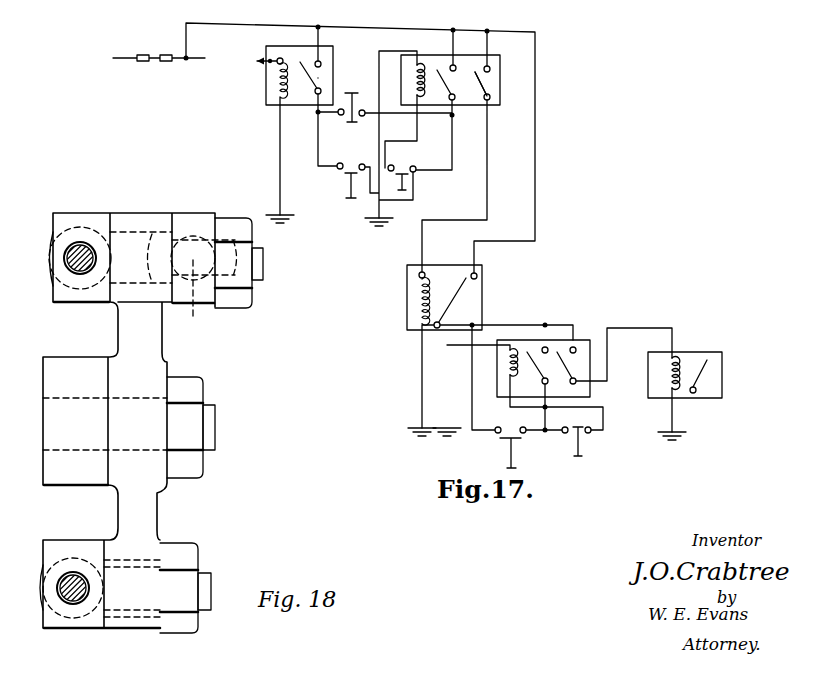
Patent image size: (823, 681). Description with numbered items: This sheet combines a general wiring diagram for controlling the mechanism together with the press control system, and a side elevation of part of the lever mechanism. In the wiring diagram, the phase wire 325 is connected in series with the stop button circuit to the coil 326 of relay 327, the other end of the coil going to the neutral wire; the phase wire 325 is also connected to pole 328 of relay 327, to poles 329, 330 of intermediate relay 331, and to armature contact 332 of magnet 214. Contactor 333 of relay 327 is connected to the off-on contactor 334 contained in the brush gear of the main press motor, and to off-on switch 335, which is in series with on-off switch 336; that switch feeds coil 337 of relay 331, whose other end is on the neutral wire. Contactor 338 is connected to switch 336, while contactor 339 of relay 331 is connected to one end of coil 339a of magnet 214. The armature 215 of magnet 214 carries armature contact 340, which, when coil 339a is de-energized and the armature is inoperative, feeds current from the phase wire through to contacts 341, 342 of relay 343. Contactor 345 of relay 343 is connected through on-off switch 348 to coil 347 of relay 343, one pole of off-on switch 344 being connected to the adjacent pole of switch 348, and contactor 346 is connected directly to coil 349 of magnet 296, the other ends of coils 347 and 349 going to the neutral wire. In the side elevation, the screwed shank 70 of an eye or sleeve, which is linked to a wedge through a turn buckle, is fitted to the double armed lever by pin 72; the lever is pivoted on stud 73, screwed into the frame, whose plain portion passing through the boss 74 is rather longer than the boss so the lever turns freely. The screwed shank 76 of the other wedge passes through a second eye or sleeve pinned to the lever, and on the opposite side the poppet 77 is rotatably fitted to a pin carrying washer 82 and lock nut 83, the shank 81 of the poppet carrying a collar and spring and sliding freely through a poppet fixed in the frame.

In FIG. 17, the phase wire 325 is at (123, 55).
In FIG. 17, the coil of relay 327 326 is at (272, 80).
In FIG. 17, the relay 327 is at (302, 94).
In FIG. 17, the pole of relay 327 328 is at (318, 61).
In FIG. 17, the pole of intermediate relay 331 329 is at (460, 67).
In FIG. 17, the pole of intermediate relay 331 330 is at (491, 69).
In FIG. 17, the intermediate relay 331 is at (441, 66).
In FIG. 17, the armature contact of magnet 214 332 is at (480, 274).
In FIG. 17, the contactor of relay 327 333 is at (322, 88).
In FIG. 17, the off-on contactor 334 is at (353, 100).
In FIG. 17, the off-on switch 335 is at (338, 170).
In FIG. 17, the on-off switch 336 is at (415, 173).
In FIG. 17, the coil of relay 331 337 is at (411, 65).
In FIG. 17, the contactor 338 is at (461, 99).
In FIG. 17, the contactor of relay 331 339 is at (497, 93).
In FIG. 17, the coil of magnet 214 339a is at (420, 274).
In FIG. 17, the armature contact 340 is at (427, 326).
In FIG. 17, the contact of relay 343 341 is at (548, 346).
In FIG. 17, the contact of relay 343 342 is at (577, 346).
In FIG. 17, the relay 343 is at (577, 366).
In FIG. 17, the off-on switch 344 is at (515, 441).
In FIG. 17, the contactor of relay 343 345 is at (541, 384).
In FIG. 17, the contactor 346 is at (578, 384).
In FIG. 17, the coil of relay 343 347 is at (505, 366).
In FIG. 17, the on-off switch 348 is at (592, 436).
In FIG. 17, the coil of magnet 296 349 is at (678, 370).
In FIG. 17, the electro-magnet 296 is at (706, 378).
In FIG. 17, the electro-magnet 214 is at (472, 288).
In FIG. 17, the armature of electro-magnet 214 215 is at (446, 318).
In FIG. 18, the screwed shank 70 is at (72, 570).
In FIG. 18, the pin 72 is at (215, 580).
In FIG. 18, the stud 73 is at (216, 424).
In FIG. 18, the boss of lever 71 74 is at (168, 367).
In FIG. 18, the screwed shank 76 is at (81, 243).
In FIG. 18, the poppet 77 is at (95, 235).
In FIG. 18, the shank of poppet 77 81 is at (196, 304).
In FIG. 18, the washer 82 is at (218, 217).
In FIG. 18, the lock nut 83 is at (248, 297).